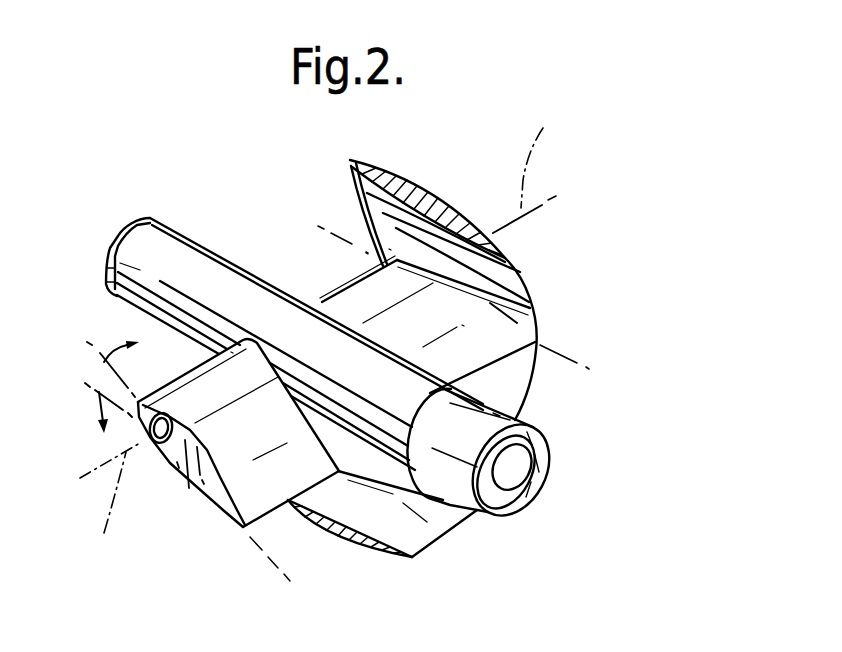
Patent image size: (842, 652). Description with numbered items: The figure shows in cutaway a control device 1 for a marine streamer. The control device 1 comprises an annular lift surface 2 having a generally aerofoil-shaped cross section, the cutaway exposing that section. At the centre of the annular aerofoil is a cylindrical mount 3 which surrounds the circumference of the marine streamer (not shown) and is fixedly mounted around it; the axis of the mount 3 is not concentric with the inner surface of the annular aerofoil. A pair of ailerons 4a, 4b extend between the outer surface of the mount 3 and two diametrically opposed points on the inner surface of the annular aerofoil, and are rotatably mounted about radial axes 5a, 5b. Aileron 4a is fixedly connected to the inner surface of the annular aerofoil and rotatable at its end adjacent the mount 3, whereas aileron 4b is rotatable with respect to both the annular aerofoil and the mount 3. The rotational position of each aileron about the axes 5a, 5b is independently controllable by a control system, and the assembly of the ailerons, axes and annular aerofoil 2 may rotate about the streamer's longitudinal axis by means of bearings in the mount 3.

The control device 1 is at (253, 178).
The annular lift surface 2 is at (423, 193).
The cylindrical mount 3 is at (514, 512).
The aileron 4a is at (510, 330).
The aileron 4b is at (317, 458).
The radial axis 5a is at (453, 233).
The radial axis 5b is at (110, 454).